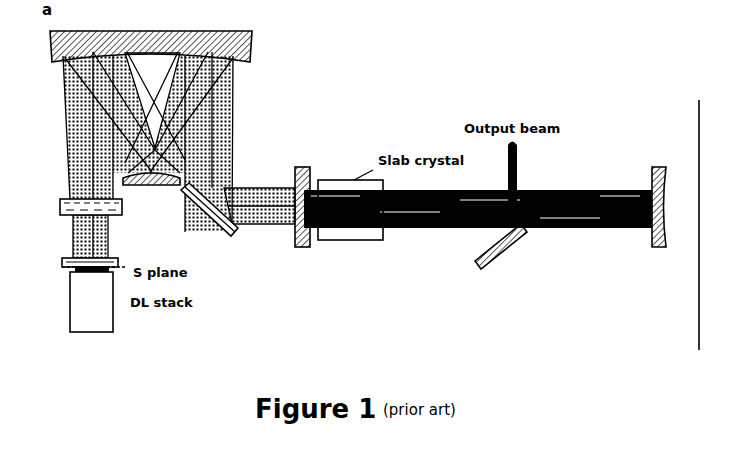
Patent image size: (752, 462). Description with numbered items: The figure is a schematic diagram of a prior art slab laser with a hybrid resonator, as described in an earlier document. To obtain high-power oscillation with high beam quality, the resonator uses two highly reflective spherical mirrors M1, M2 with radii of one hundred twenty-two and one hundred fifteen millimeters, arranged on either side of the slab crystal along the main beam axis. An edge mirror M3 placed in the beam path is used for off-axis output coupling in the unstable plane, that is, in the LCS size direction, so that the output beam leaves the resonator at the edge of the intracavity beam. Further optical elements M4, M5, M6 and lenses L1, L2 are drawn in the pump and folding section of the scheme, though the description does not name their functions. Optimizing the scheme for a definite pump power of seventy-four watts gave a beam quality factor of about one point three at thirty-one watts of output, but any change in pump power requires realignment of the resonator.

The spherical mirror M1 is at (659, 222).
The spherical mirror M2 is at (302, 221).
The edge mirror M3 is at (501, 249).
The folding mirror M4 is at (212, 223).
The curved mirror M5 is at (163, 46).
The lens/mirror M6 is at (151, 192).
The lens L1 is at (80, 267).
The lens L2 is at (82, 209).